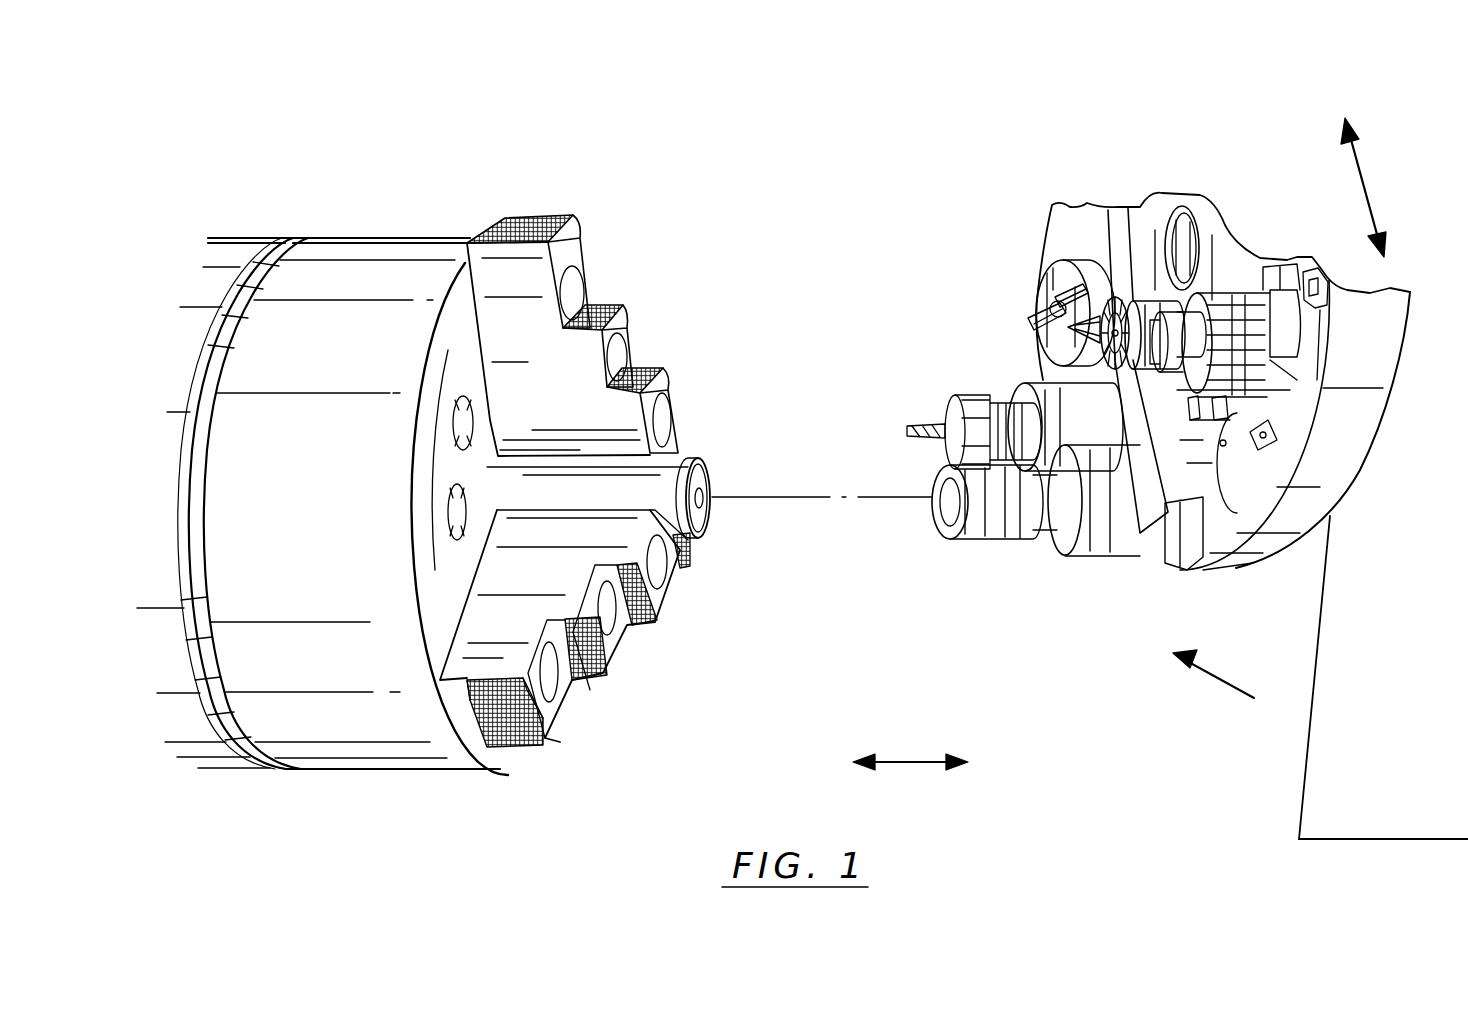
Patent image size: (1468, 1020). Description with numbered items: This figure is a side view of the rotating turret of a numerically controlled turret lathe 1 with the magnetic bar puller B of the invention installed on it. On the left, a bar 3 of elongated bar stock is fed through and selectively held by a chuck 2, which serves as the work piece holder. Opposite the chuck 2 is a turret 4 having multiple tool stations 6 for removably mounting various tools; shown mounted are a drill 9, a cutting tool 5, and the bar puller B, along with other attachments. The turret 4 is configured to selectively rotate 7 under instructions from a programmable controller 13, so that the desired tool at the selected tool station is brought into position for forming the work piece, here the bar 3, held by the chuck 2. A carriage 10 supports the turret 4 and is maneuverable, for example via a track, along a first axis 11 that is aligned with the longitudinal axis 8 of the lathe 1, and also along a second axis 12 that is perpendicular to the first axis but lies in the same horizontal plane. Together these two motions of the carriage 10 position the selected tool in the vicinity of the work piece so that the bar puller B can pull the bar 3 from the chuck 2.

The numerically controlled turret lathe 1 is at (1402, 350).
The chuck 2 is at (694, 552).
The bar 3 is at (712, 468).
The turret 4 is at (1330, 492).
The cutting tool 5 is at (1121, 300).
The tool stations 6 is at (1052, 303).
The rotate 7 is at (1378, 178).
The longitudinal axis 8 is at (836, 500).
The drill 9 is at (913, 415).
The carriage 10 is at (1298, 820).
The first axis 11 is at (906, 765).
The second axis 12 is at (1223, 678).
The programmable controller 13 is at (1406, 803).
The bar puller B is at (990, 545).